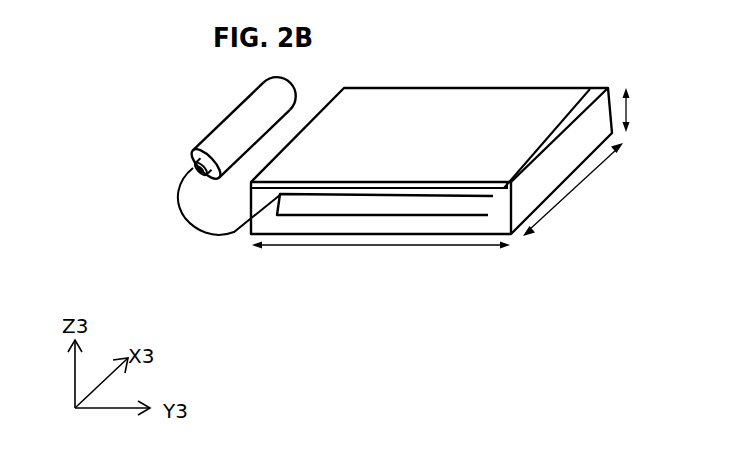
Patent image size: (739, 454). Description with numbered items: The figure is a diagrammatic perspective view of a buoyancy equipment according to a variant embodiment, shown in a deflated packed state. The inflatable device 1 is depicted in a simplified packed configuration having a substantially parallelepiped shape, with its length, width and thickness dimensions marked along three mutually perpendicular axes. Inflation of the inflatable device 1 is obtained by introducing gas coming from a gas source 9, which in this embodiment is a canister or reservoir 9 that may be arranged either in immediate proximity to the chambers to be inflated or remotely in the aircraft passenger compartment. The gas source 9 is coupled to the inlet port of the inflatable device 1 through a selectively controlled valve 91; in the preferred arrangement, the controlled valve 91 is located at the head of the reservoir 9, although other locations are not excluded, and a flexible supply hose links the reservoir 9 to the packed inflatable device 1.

The inflatable device 1 is at (474, 72).
The gas source 9 is at (223, 135).
The selectively controlled valve 91 is at (195, 160).